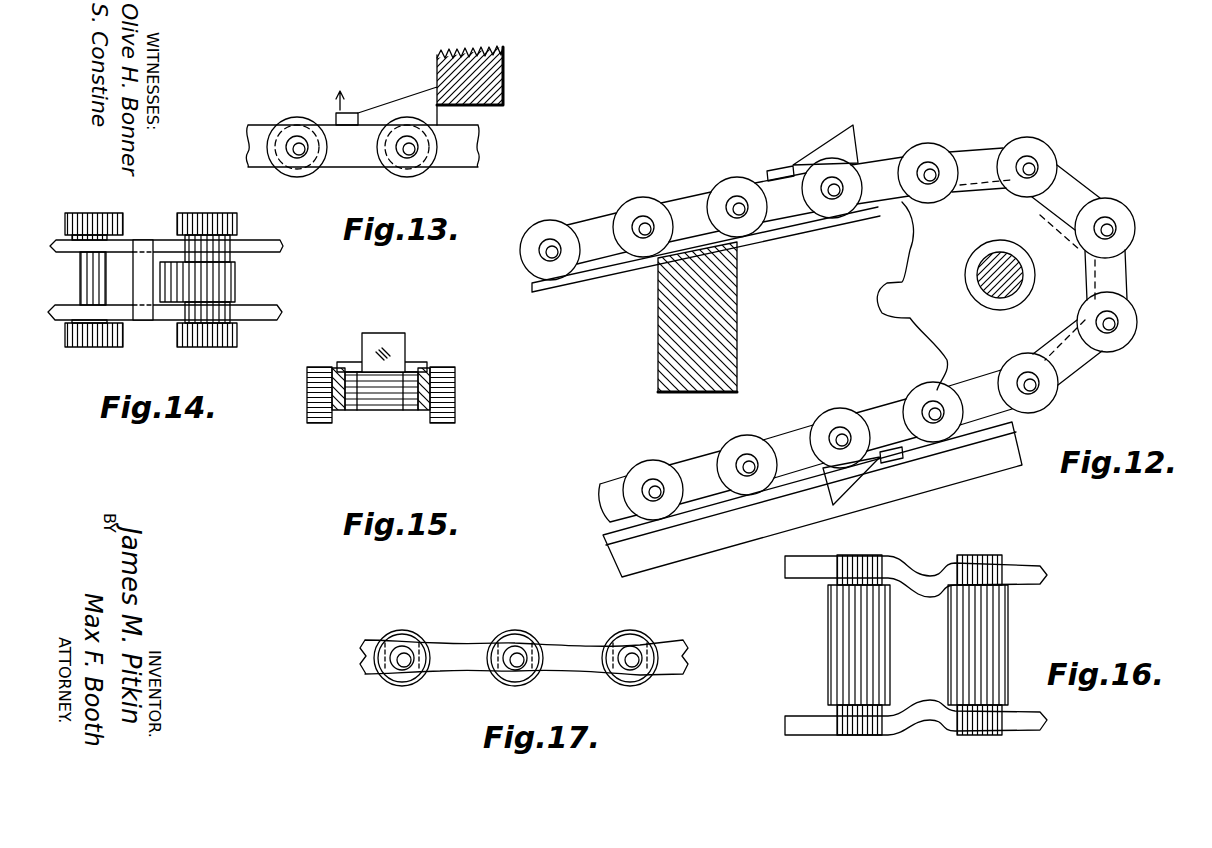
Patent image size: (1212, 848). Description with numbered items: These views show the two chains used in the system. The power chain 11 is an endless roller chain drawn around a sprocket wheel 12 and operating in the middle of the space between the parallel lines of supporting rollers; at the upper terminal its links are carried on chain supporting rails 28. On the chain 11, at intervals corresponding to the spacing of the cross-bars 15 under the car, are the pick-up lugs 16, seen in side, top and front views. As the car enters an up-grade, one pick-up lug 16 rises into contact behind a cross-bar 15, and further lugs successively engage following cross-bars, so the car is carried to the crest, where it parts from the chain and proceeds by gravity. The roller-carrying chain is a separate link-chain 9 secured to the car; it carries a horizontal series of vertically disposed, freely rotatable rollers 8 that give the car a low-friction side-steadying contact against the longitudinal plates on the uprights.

In FIG. 16, the rollers 8 is at (838, 633).
In FIG. 17, the rollers 8 is at (403, 632).
In FIG. 16, the link-chain 9 is at (908, 577).
In FIG. 17, the link-chain 9 is at (565, 652).
In FIG. 12, the power chain 11 is at (828, 329).
In FIG. 13, the power chain 11 is at (465, 150).
In FIG. 14, the power chain 11 is at (252, 315).
In FIG. 15, the power chain 11 is at (440, 392).
In FIG. 12, the sprocket wheel 12 is at (956, 296).
In FIG. 13, the cross-bars 15 is at (490, 84).
In FIG. 12, the pick-up lugs 16 is at (850, 138).
In FIG. 13, the pick-up lugs 16 is at (404, 103).
In FIG. 14, the pick-up lugs 16 is at (145, 275).
In FIG. 15, the pick-up lugs 16 is at (400, 343).
In FIG. 12, the chain supporting rails 28 is at (812, 232).